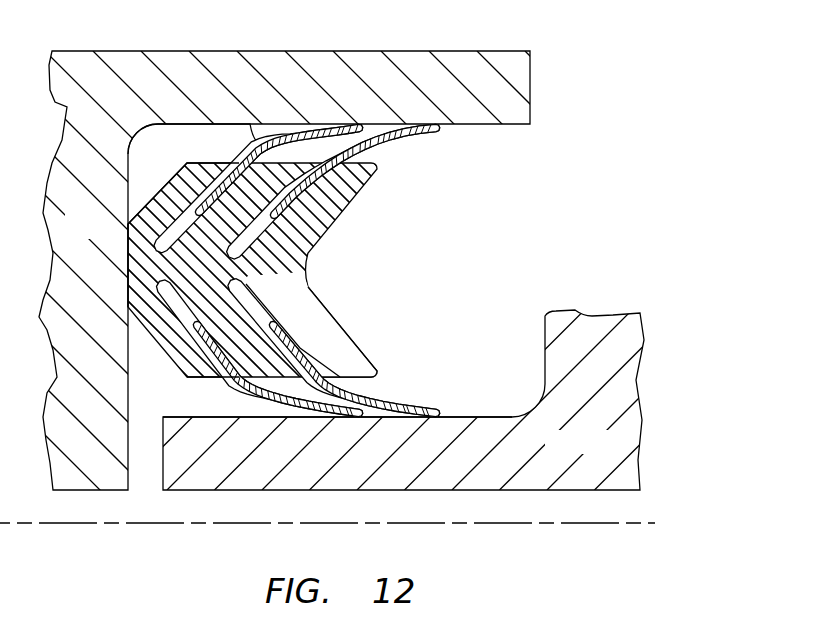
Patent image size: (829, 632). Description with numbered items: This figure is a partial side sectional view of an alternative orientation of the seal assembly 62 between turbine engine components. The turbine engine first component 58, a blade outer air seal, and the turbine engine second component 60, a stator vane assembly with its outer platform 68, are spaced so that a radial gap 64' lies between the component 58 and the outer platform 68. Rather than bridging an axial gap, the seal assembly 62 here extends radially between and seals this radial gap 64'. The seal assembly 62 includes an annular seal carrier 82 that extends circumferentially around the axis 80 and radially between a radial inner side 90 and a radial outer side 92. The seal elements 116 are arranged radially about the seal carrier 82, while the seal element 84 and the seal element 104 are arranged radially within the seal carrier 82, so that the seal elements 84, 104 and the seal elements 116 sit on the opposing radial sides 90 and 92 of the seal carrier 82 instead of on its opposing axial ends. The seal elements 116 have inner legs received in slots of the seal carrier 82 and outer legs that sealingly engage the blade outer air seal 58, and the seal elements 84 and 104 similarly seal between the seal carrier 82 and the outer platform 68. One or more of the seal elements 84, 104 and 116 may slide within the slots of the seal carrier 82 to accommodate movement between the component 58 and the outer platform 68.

The turbine engine first component 58 is at (97, 236).
The turbine engine second component 60 is at (426, 397).
The seal assembly 62 is at (146, 343).
The radial gap 64' is at (514, 215).
The outer platform 68 is at (614, 456).
The axis 80 is at (657, 524).
The seal carrier 82 is at (340, 338).
The seal element 84 is at (326, 400).
The radial inner side 90 is at (213, 378).
The radial outer side 92 is at (212, 164).
The seal element 104 is at (387, 417).
The seal elements 116 is at (250, 150).